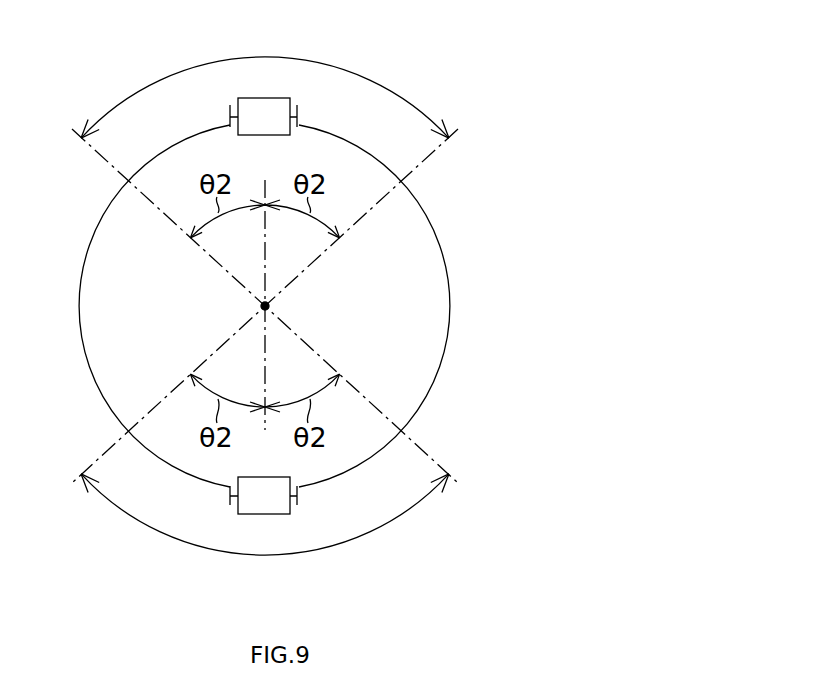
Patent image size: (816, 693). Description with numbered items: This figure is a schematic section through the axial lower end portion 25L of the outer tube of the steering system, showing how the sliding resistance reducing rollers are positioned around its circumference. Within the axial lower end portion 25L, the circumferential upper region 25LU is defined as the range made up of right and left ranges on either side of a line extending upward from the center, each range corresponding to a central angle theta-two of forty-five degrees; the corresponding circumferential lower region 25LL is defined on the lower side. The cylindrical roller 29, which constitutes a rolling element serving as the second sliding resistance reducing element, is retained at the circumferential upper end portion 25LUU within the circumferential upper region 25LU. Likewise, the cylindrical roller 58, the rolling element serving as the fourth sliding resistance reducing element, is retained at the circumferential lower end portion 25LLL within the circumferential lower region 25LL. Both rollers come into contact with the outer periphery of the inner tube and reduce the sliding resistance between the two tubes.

The axial lower end portion of the outer tube 25L is at (421, 209).
The circumferential upper region 25LU is at (175, 75).
The circumferential lower region 25LL is at (207, 550).
The circumferential upper end portion 25LUU is at (305, 127).
The circumferential lower end portion 25LLL is at (305, 487).
The cylindrical roller 29 is at (263, 108).
The cylindrical roller 58 is at (270, 503).